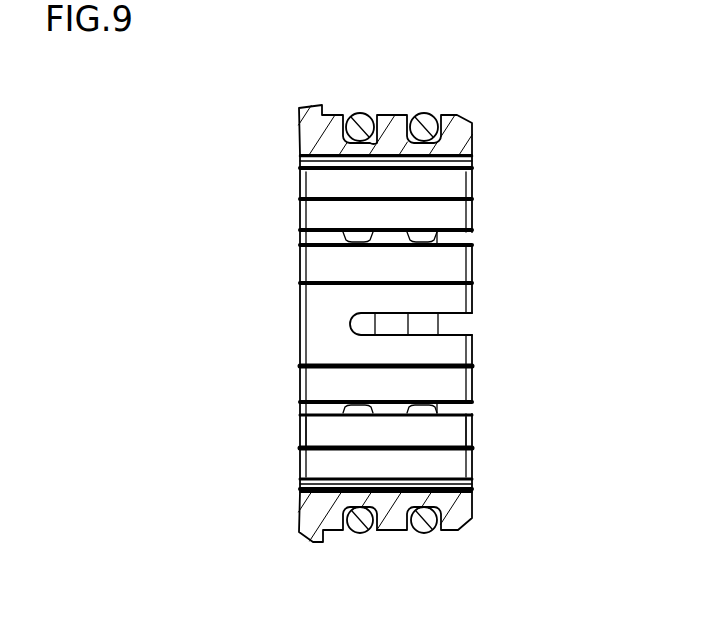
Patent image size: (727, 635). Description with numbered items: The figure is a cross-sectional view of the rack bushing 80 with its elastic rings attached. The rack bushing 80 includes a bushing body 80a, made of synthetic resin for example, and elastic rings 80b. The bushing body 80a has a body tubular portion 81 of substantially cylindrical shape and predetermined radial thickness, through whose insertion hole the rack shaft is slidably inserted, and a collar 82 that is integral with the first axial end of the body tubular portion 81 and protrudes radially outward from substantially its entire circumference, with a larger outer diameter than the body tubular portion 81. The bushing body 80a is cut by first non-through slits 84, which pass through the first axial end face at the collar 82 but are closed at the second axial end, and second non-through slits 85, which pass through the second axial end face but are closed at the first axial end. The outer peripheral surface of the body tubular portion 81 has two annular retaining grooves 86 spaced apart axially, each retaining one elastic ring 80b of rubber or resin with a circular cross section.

The rack bushing 80 is at (268, 334).
The bushing body 80a is at (300, 263).
The elastic ring 80b is at (357, 118).
The body tubular portion 81 is at (455, 435).
The collar 82 is at (308, 538).
The first non-through slit 84 is at (305, 238).
The second non-through slit 85 is at (453, 327).
The retaining groove 86 is at (358, 530).